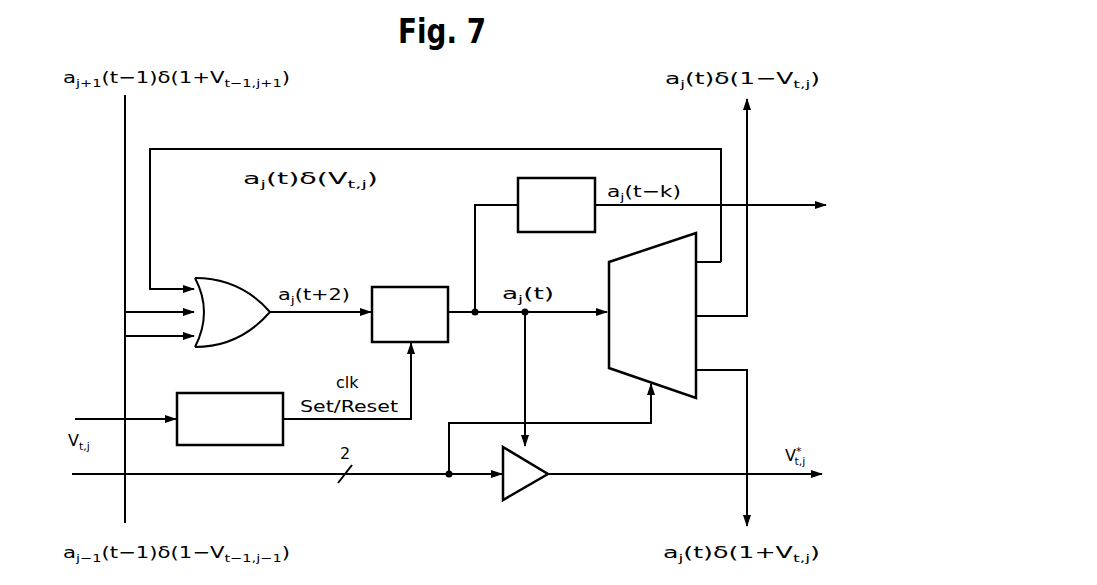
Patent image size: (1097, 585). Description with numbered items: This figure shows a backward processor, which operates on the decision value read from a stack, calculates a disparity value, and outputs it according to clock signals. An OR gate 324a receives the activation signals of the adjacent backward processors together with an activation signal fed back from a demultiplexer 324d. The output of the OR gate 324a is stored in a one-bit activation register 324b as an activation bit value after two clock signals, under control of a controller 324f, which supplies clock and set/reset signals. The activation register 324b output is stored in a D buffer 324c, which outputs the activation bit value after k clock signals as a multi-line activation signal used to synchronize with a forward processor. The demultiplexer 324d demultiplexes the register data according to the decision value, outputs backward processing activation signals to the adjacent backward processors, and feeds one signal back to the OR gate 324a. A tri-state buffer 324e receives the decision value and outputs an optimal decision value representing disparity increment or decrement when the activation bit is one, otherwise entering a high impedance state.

The OR gate 324a is at (229, 271).
The one-bit activation register 324b is at (413, 287).
The D buffer 324c is at (518, 194).
The demultiplexer 324d is at (696, 333).
The tri-state buffer 324e is at (527, 488).
The controller 324f is at (241, 393).